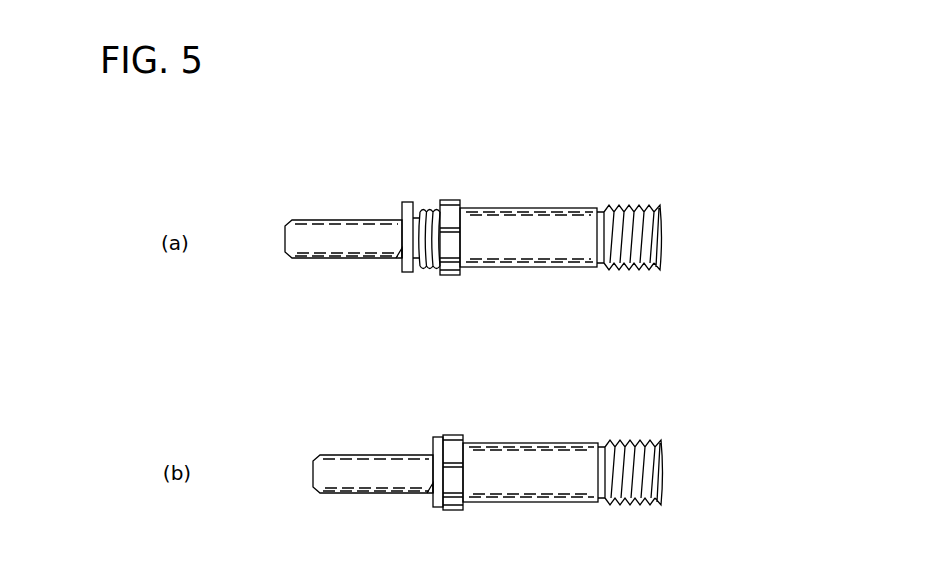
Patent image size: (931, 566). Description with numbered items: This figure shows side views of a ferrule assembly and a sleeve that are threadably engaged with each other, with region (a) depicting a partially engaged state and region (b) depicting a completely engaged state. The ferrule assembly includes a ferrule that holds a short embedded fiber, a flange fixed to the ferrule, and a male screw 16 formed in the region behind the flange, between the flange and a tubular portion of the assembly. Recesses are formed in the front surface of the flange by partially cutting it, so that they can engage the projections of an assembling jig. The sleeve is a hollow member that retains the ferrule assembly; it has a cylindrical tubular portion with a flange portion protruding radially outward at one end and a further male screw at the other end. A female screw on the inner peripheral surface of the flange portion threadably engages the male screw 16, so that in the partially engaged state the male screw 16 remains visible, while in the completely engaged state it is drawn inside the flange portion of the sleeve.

The male screw 16 is at (428, 210).